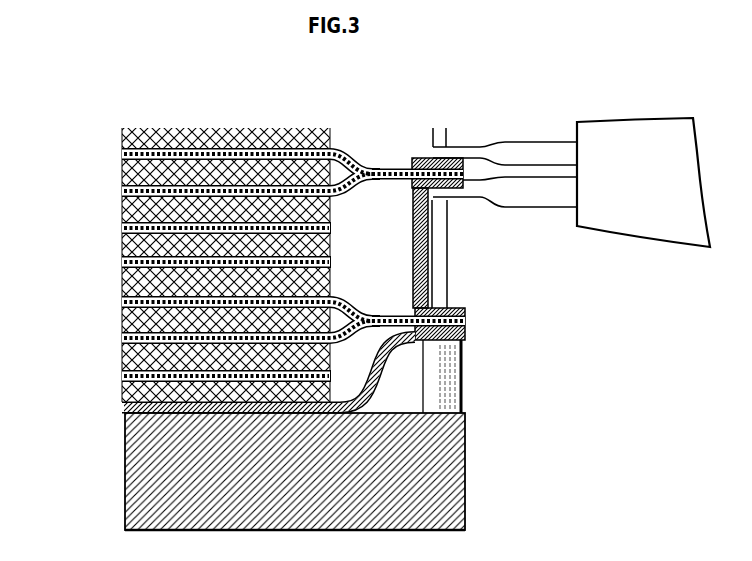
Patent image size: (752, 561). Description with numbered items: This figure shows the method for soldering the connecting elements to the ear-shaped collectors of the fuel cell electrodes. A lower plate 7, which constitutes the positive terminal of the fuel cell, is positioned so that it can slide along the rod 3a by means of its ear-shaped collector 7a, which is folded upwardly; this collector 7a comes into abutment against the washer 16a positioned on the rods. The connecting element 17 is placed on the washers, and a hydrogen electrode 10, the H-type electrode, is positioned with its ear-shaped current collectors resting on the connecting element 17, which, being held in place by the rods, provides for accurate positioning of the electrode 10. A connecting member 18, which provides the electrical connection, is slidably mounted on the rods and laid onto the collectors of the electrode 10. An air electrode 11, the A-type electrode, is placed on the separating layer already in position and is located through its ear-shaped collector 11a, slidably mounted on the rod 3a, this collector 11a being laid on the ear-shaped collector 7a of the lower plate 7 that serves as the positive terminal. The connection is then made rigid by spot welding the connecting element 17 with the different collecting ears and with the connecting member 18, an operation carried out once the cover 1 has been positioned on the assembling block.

The cover 1 is at (137, 465).
The rod 3a is at (445, 128).
The lower plate 7 is at (122, 407).
The ear-shaped collector 7a is at (430, 342).
The hydrogen electrode 10 is at (122, 262).
The air electrode 11 is at (122, 191).
The ear-shaped collector 11a is at (386, 171).
The washer 16a is at (453, 357).
The connecting element 17 is at (419, 158).
The connecting member 18 is at (433, 280).